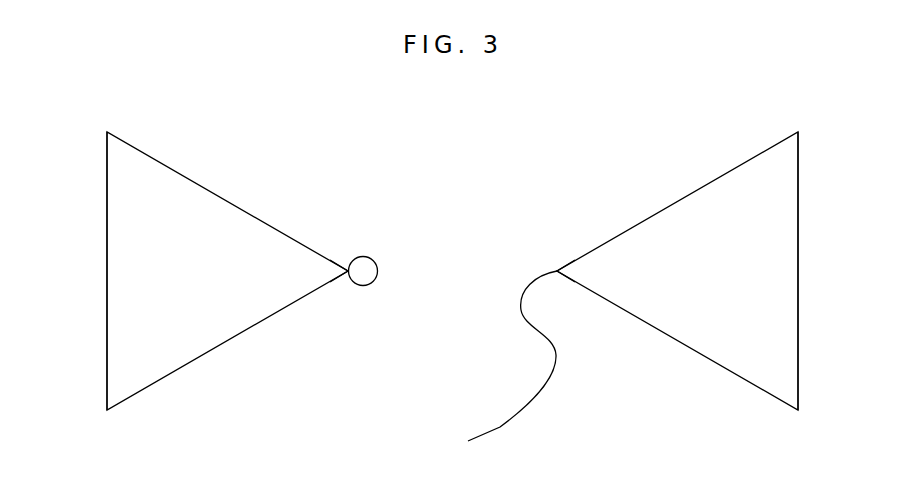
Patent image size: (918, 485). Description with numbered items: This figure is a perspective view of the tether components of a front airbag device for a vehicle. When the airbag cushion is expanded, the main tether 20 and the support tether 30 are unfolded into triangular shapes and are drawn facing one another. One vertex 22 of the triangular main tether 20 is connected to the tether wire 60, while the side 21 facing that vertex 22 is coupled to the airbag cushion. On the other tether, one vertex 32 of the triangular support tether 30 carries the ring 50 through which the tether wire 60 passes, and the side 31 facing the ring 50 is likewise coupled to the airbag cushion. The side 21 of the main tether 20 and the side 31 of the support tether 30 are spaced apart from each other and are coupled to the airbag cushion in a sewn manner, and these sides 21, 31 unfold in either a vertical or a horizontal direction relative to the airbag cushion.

The main tether 20 is at (640, 197).
The side 21 is at (798, 270).
The vertex 22 is at (558, 268).
The support tether 30 is at (266, 194).
The side 31 is at (106, 270).
The vertex 32 is at (347, 268).
The ring 50 is at (364, 268).
The tether wire 60 is at (517, 420).